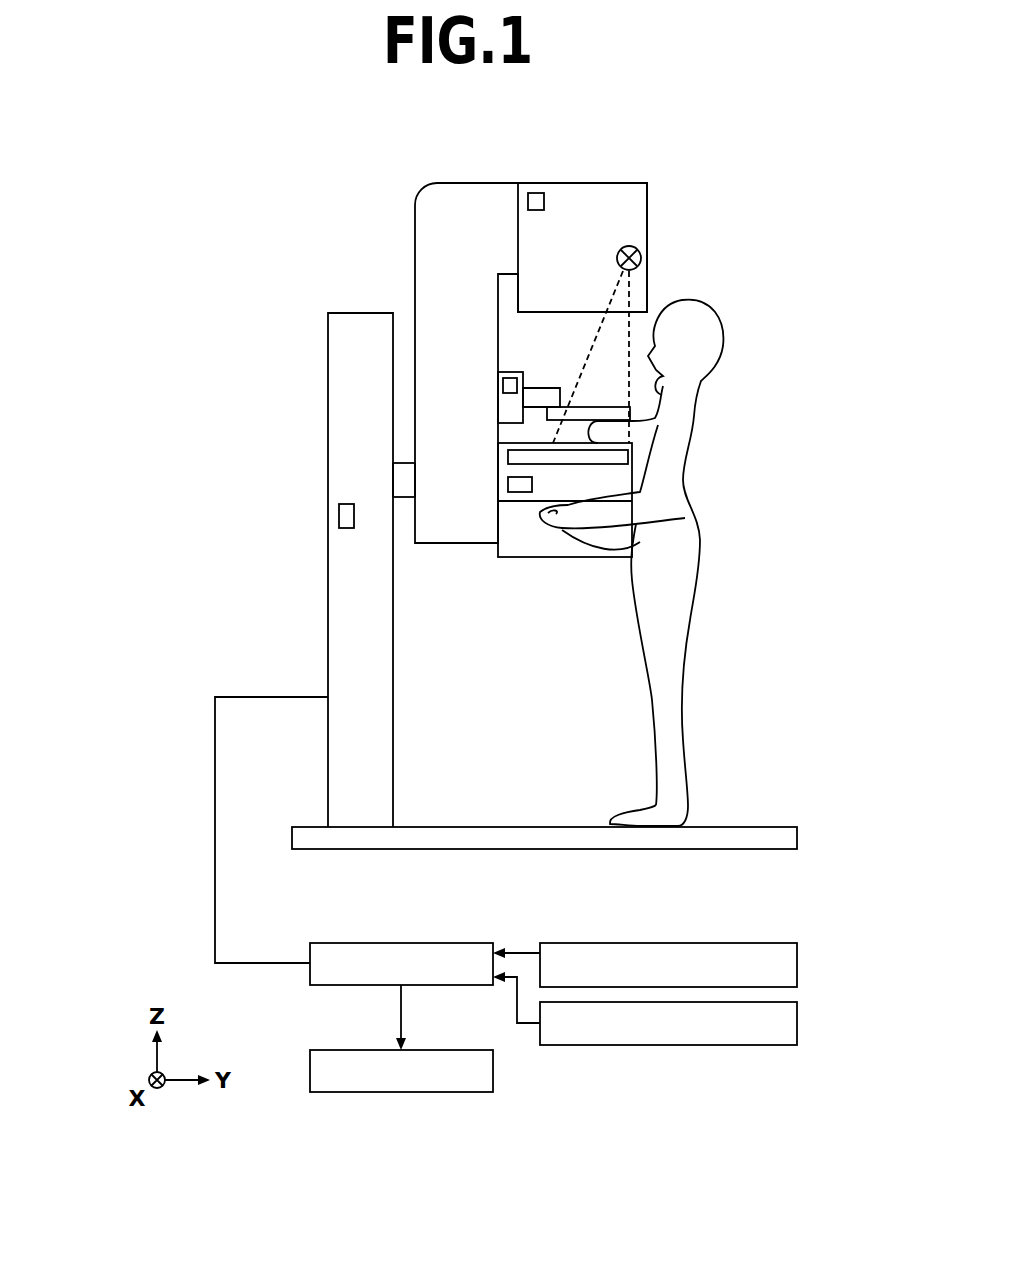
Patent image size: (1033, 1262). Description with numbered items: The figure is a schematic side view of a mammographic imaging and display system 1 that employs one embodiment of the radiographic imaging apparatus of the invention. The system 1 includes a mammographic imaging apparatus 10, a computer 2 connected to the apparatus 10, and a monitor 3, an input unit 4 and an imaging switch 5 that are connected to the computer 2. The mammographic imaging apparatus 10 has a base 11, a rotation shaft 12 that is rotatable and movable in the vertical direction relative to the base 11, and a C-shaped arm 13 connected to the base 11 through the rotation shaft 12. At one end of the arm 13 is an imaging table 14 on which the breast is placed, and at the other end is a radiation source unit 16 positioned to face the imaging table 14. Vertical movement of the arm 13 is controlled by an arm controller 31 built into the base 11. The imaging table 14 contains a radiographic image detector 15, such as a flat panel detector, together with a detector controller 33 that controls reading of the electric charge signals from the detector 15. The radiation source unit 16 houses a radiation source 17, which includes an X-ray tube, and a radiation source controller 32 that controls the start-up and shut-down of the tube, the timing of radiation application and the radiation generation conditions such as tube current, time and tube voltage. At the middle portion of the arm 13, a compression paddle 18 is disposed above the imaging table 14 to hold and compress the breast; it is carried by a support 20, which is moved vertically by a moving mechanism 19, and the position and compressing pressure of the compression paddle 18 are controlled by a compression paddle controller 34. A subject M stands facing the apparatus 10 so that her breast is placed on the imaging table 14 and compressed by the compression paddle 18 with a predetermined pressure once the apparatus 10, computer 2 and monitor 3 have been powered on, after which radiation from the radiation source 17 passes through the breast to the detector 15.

The mammographic imaging and display system 1 is at (327, 146).
The computer 2 is at (455, 943).
The monitor 3 is at (455, 1050).
The input unit 4 is at (760, 943).
The imaging switch 5 is at (760, 1045).
The mammographic imaging apparatus 10 is at (284, 178).
The base 11 is at (332, 440).
The rotation shaft 12 is at (405, 490).
The arm 13 is at (410, 206).
The imaging table 14 is at (530, 503).
The radiographic image detector 15 is at (594, 457).
The radiation source unit 16 is at (593, 183).
The radiation source 17 is at (640, 250).
The compression paddle 18 is at (597, 407).
The moving mechanism 19 is at (515, 372).
The support 20 is at (548, 388).
The arm controller 31 is at (338, 518).
The radiation source controller 32 is at (538, 190).
The detector controller 33 is at (520, 492).
The compression paddle controller 34 is at (503, 385).
The subject M is at (685, 511).